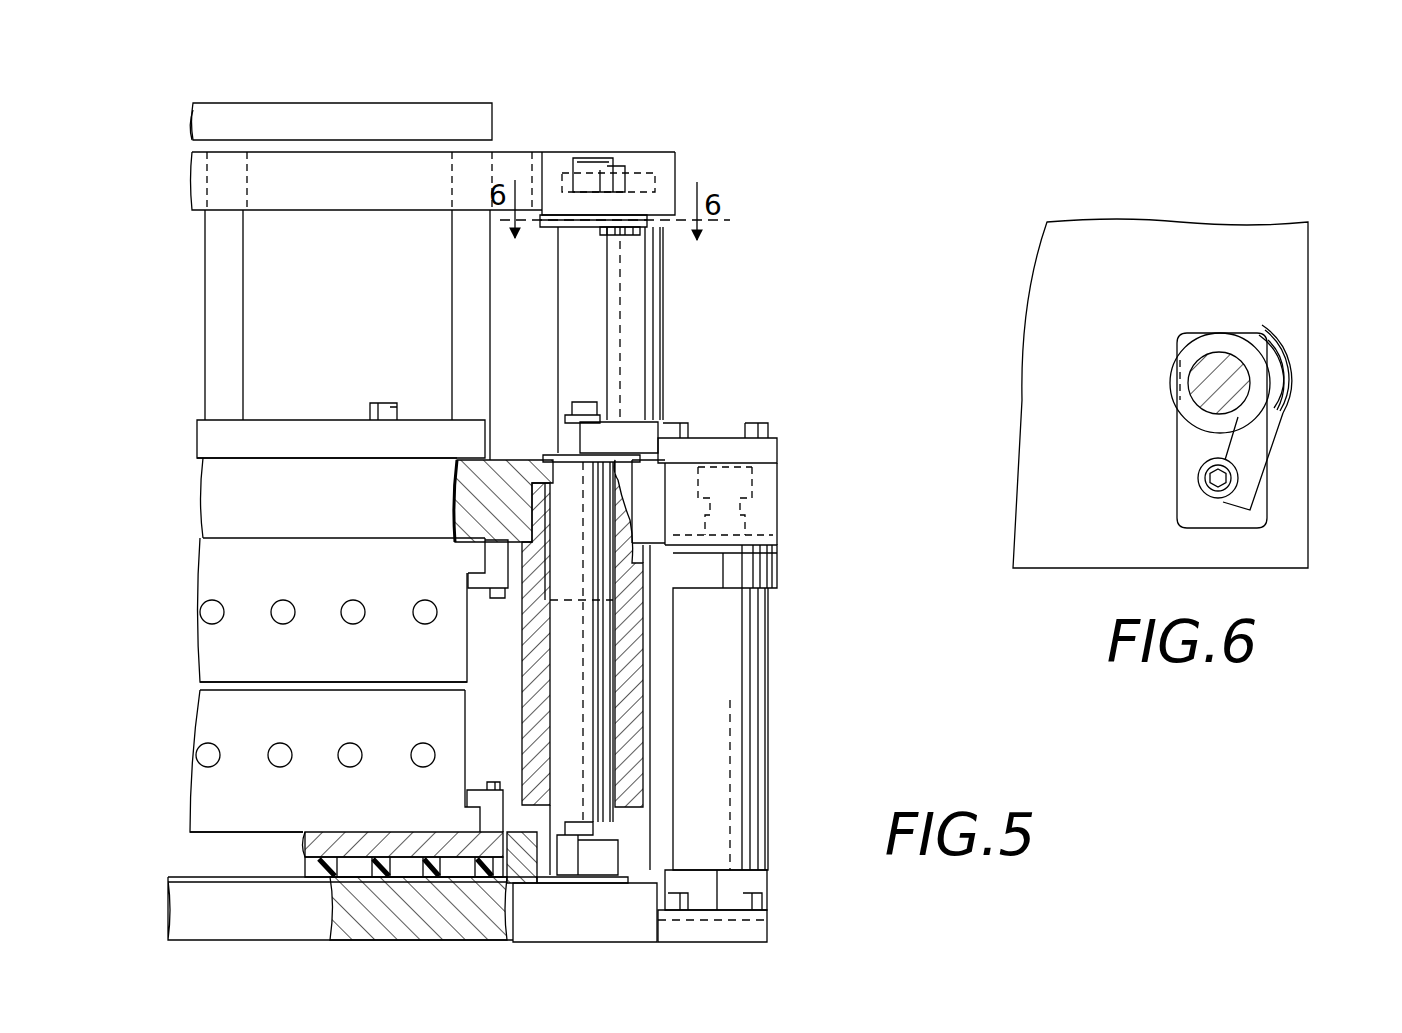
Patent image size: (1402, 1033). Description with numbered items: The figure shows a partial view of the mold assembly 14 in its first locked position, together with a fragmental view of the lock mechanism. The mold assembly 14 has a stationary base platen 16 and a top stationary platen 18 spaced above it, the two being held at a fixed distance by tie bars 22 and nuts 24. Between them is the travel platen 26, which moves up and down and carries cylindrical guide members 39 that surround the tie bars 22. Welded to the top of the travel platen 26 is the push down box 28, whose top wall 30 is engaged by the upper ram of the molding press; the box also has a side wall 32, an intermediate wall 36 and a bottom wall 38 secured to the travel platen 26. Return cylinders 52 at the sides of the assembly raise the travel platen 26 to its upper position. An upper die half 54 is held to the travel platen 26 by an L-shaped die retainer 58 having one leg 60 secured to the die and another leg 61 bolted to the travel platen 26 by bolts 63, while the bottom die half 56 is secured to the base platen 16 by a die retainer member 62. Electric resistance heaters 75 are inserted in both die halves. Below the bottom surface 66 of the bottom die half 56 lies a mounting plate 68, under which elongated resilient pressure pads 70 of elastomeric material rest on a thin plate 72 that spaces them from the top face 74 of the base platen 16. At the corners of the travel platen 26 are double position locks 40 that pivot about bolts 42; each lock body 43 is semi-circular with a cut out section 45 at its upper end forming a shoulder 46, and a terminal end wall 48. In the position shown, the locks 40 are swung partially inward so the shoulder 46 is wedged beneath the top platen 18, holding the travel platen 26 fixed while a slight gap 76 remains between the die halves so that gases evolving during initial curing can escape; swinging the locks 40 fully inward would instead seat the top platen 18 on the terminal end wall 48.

In FIG. 5, the mold assembly 14 is at (712, 383).
In FIG. 5, the stationary base platen 16 is at (178, 915).
In FIG. 5, the top stationary platen 18 is at (192, 192).
In FIG. 5, the tie bar 22 is at (562, 336).
In FIG. 6, the tie bar 22 is at (1197, 385).
In FIG. 5, the nut 24 is at (615, 185).
In FIG. 5, the travel platen 26 is at (215, 497).
In FIG. 6, the travel platen 26 is at (1030, 542).
In FIG. 5, the push down box 28 is at (190, 128).
In FIG. 5, the top wall 30 is at (320, 103).
In FIG. 5, the side wall 32 is at (452, 262).
In FIG. 5, the intermediate wall 36 is at (245, 272).
In FIG. 5, the bottom wall 38 is at (302, 430).
In FIG. 5, the cylindrical guide member 39 is at (518, 712).
In FIG. 5, the double position lock 40 is at (665, 293).
In FIG. 6, the double position lock 40 is at (1296, 390).
In FIG. 5, the bolt 42 is at (585, 415).
In FIG. 6, the bolt 42 is at (1210, 480).
In FIG. 5, the lock body 43 is at (662, 322).
In FIG. 6, the lock body 43 is at (1292, 400).
In FIG. 6, the cut out section 45 is at (1277, 352).
In FIG. 5, the shoulder 46 is at (600, 228).
In FIG. 6, the shoulder 46 is at (1284, 362).
In FIG. 6, the terminal end wall 48 is at (1291, 384).
In FIG. 5, the return cylinder 52 is at (762, 785).
In FIG. 5, the upper die half 54 is at (240, 666).
In FIG. 5, the bottom die half 56 is at (212, 736).
In FIG. 5, the die retainer 58 is at (483, 558).
In FIG. 5, the leg 60 is at (470, 577).
In FIG. 5, the leg 61 is at (460, 522).
In FIG. 5, the die retainer member 62 is at (478, 818).
In FIG. 5, the bolt 63 is at (497, 598).
In FIG. 5, the bottom surface 66 is at (322, 834).
In FIG. 5, the mounting plate 68 is at (345, 842).
In FIG. 5, the resilient pressure pad 70 is at (370, 868).
In FIG. 5, the thin plate 72 is at (458, 882).
In FIG. 5, the top face 74 is at (520, 872).
In FIG. 5, the electric resistance heater 75 is at (343, 610).
In FIG. 5, the gap 76 is at (335, 685).